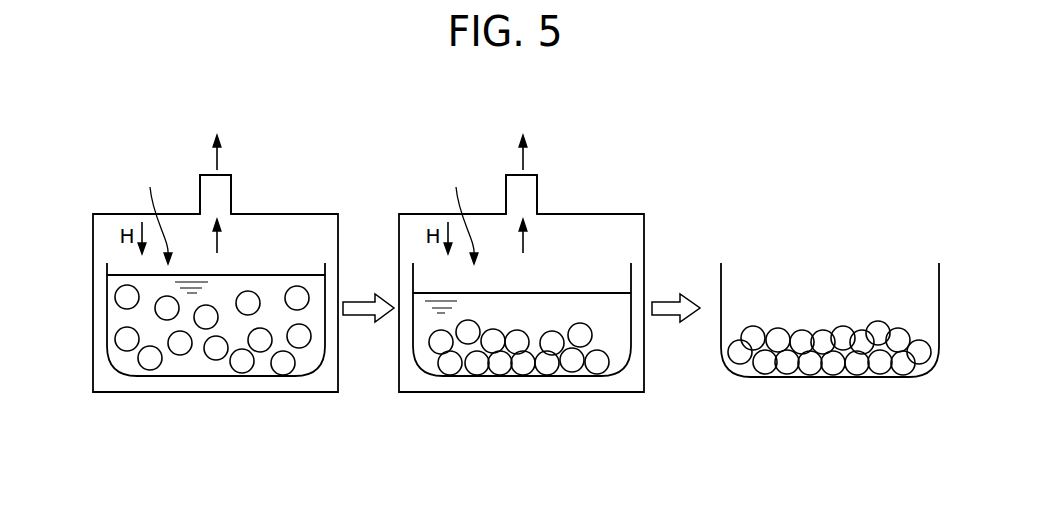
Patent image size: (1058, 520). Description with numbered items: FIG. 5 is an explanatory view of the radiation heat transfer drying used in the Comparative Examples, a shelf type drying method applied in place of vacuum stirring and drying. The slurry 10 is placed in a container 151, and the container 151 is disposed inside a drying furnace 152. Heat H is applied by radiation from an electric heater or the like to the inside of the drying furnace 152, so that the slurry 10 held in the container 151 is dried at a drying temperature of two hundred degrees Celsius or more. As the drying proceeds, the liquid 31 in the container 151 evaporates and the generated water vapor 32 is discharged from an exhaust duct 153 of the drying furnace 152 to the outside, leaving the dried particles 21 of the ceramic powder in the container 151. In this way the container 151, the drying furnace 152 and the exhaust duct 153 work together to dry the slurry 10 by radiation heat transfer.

The slurry 10 is at (306, 213).
The granulated particles 21 is at (297, 287).
The liquid 31 is at (266, 287).
The water vapor 32 is at (558, 198).
The container 151 is at (103, 268).
The drying furnace 152 is at (218, 394).
The exhaust duct 153 is at (200, 200).